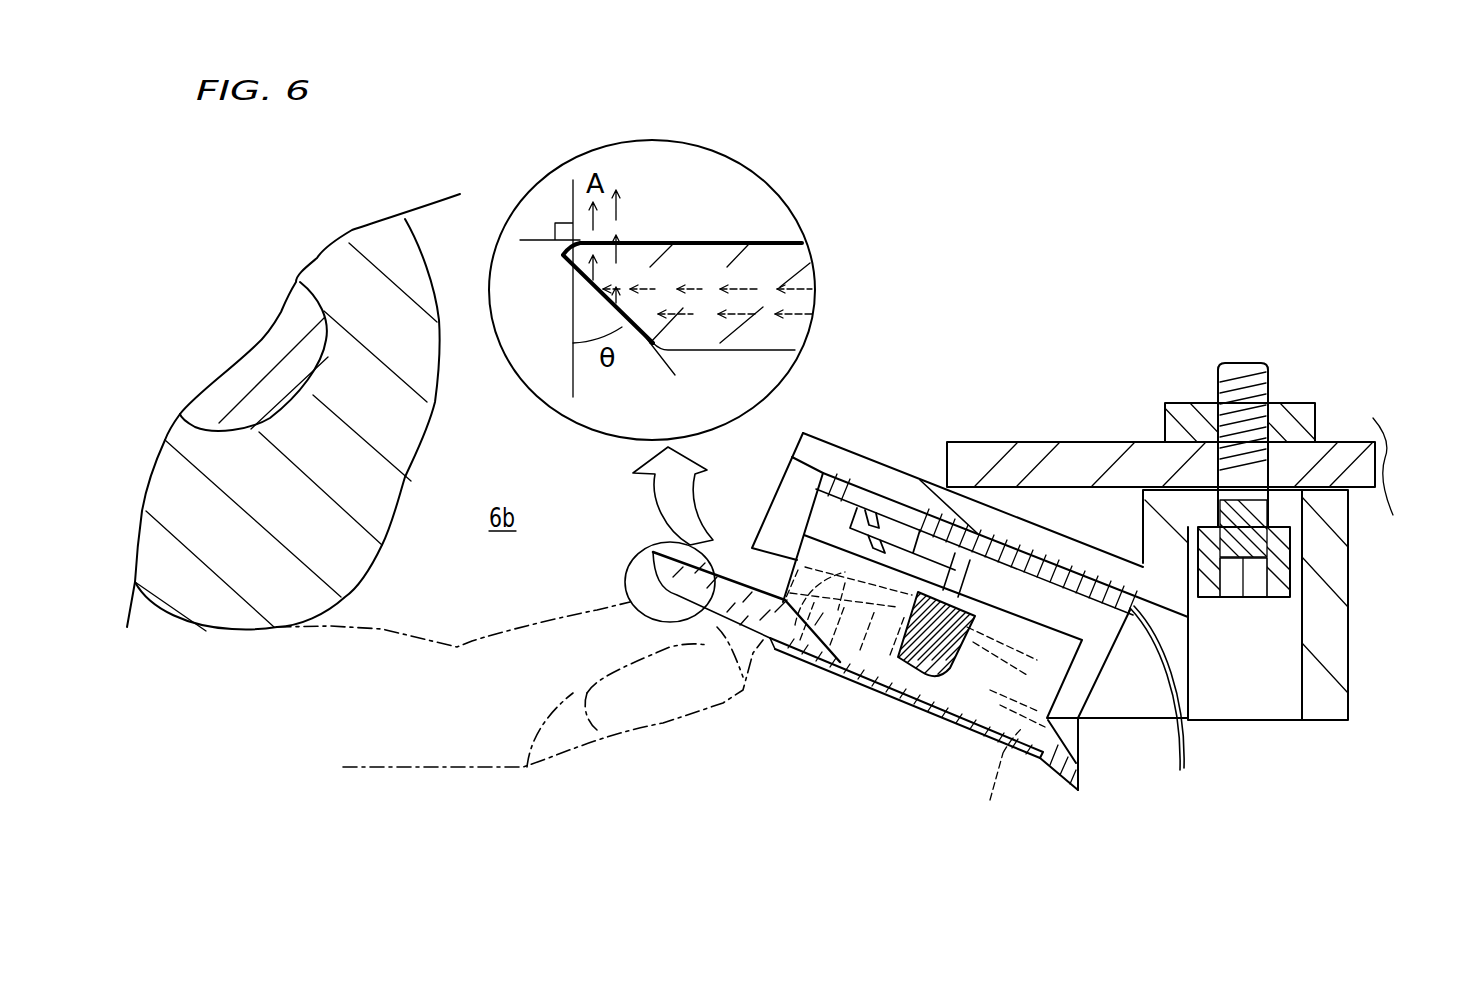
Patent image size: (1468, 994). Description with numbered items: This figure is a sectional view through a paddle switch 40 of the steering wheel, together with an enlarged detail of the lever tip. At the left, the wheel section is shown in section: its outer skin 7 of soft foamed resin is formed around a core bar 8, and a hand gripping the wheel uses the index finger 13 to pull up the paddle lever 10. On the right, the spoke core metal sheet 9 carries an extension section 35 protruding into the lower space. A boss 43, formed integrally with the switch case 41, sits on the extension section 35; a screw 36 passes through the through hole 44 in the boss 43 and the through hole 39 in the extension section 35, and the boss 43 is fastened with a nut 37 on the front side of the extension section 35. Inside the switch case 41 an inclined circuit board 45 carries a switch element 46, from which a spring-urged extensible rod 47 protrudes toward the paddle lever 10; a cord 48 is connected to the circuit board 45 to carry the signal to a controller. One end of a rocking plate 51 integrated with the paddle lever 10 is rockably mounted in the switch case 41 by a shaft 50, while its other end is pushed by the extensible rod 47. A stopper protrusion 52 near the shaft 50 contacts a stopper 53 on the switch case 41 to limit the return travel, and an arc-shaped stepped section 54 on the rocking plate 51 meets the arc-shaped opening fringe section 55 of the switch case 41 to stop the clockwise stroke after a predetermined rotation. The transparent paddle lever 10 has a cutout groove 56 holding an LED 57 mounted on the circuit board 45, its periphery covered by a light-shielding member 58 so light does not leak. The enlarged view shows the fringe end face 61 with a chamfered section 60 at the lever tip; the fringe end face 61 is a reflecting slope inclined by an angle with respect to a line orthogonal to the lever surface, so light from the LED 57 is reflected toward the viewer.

The outer skin 7 is at (336, 294).
The core bar 8 is at (247, 382).
The spoke core metal sheet 9 is at (1387, 471).
The paddle lever 10 is at (748, 270).
The index finger 13 is at (527, 767).
The extension section 35 is at (1090, 455).
The screw 36 is at (1248, 363).
The nut 37 is at (1292, 408).
The through hole 39 is at (1318, 442).
The paddle switch 40 is at (907, 430).
The switch case 41 is at (838, 423).
The boss 43 is at (1340, 665).
The through hole 44 is at (1290, 540).
The circuit board 45 is at (850, 493).
The switch element 46 is at (880, 493).
The extensible rod 47 is at (930, 476).
The cord 48 is at (1186, 765).
The shaft 50 is at (990, 800).
The rocking plate 51 is at (947, 677).
The stopper protrusion 52 is at (1079, 775).
The stopper 53 is at (1082, 730).
The stepped section 54 is at (830, 647).
The opening fringe section 55 is at (770, 647).
The cutout groove 56 is at (907, 663).
The LED 57 is at (937, 677).
The light-shielding member 58 is at (990, 725).
The chamfered section 60 is at (580, 247).
The fringe end face 61 is at (603, 303).